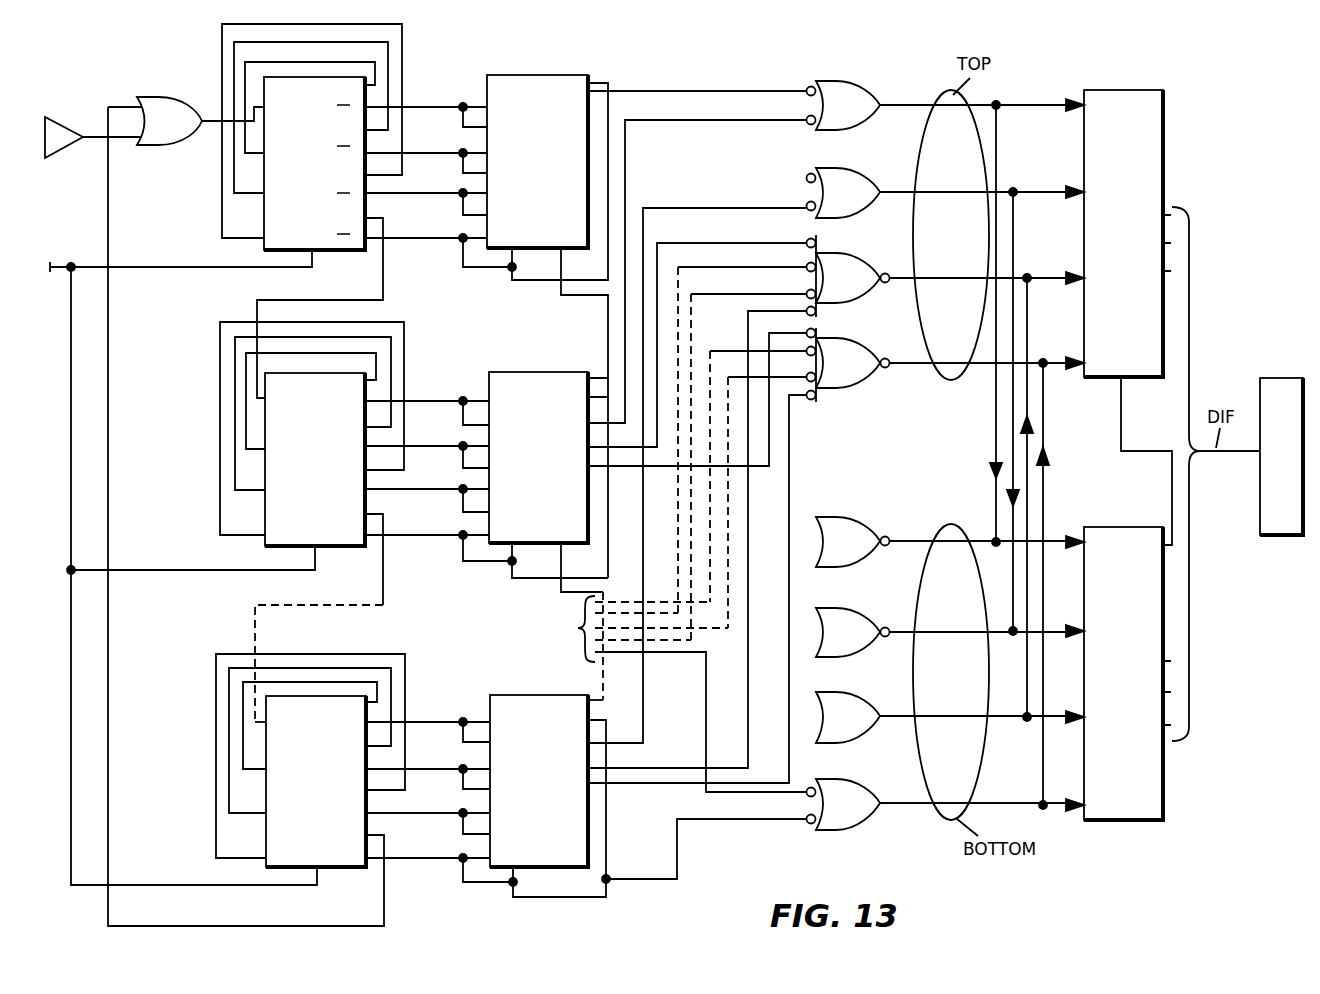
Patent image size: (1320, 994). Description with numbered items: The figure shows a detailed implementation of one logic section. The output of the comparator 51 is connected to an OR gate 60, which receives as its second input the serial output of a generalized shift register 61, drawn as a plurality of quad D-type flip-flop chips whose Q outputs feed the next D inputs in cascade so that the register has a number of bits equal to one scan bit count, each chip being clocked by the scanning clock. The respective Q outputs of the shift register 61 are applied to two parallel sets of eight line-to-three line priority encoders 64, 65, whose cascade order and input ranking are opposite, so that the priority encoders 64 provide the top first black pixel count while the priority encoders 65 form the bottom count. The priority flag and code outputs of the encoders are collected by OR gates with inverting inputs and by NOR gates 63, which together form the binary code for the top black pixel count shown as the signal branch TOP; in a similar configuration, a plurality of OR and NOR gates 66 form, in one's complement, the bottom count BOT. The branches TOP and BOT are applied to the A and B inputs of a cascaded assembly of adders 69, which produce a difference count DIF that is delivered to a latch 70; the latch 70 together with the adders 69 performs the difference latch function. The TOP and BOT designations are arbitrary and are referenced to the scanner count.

The comparator 51 is at (57, 118).
The OR gate 60 is at (170, 97).
The generalized shift register 61 is at (365, 77).
The OR and NOR gates 63 is at (851, 80).
The priority encoders 64 is at (487, 78).
The priority encoders 65 is at (603, 84).
The OR and NOR gates 66 is at (859, 516).
The adders 69 is at (1138, 90).
The latch 70 is at (1260, 378).